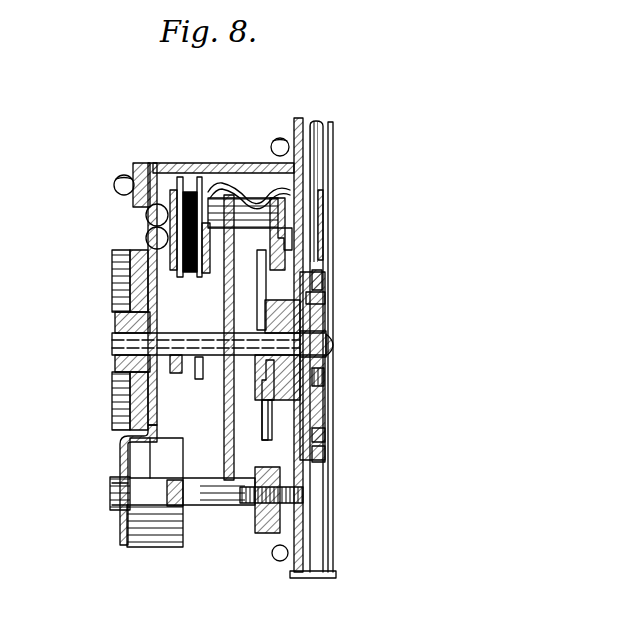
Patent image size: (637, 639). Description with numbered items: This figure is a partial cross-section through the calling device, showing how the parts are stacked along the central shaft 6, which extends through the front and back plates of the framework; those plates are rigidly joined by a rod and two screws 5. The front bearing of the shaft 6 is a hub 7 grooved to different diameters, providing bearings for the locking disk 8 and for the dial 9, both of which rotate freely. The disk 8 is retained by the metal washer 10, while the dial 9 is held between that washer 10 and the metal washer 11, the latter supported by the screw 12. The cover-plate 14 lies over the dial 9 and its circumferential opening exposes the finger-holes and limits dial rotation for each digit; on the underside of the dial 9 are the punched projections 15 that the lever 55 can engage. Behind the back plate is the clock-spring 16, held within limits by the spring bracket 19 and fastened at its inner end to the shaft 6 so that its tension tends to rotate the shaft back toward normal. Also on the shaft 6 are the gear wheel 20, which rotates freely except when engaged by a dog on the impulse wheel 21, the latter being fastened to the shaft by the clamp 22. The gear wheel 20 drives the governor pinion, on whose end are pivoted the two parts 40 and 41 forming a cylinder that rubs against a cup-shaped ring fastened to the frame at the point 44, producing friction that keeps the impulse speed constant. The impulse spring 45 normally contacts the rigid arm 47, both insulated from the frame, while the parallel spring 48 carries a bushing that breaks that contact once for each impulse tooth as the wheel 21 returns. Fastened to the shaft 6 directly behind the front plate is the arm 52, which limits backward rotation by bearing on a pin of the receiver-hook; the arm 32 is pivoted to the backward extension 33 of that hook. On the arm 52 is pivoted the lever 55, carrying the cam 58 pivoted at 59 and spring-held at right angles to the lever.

The screws 5 is at (274, 150).
The shaft 6 is at (118, 342).
The hub 7 is at (310, 330).
The locking disk 8 is at (316, 284).
The dial 9 is at (318, 120).
The metal washer 10 is at (322, 376).
The metal washer 11 is at (318, 302).
The screw 12 is at (297, 122).
The cover-plate 14 is at (331, 204).
The projections 15 is at (318, 458).
The clock-spring 16 is at (130, 278).
The spring bracket 19 is at (112, 258).
The gear wheel 20 is at (224, 412).
The impulse wheel 21 is at (200, 292).
The clamp 22 is at (186, 370).
The arm 32 is at (272, 432).
The backward extension 33 is at (286, 238).
The governor part 40 is at (164, 546).
The governor part 41 is at (148, 462).
The fastening point 44 is at (112, 494).
The impulse spring 45 is at (182, 190).
The rigid arm 47 is at (138, 172).
The spring 48 is at (200, 177).
The arm 52 is at (272, 380).
The lever 55 is at (262, 536).
The cam 58 is at (190, 505).
The pivot 59 is at (134, 510).